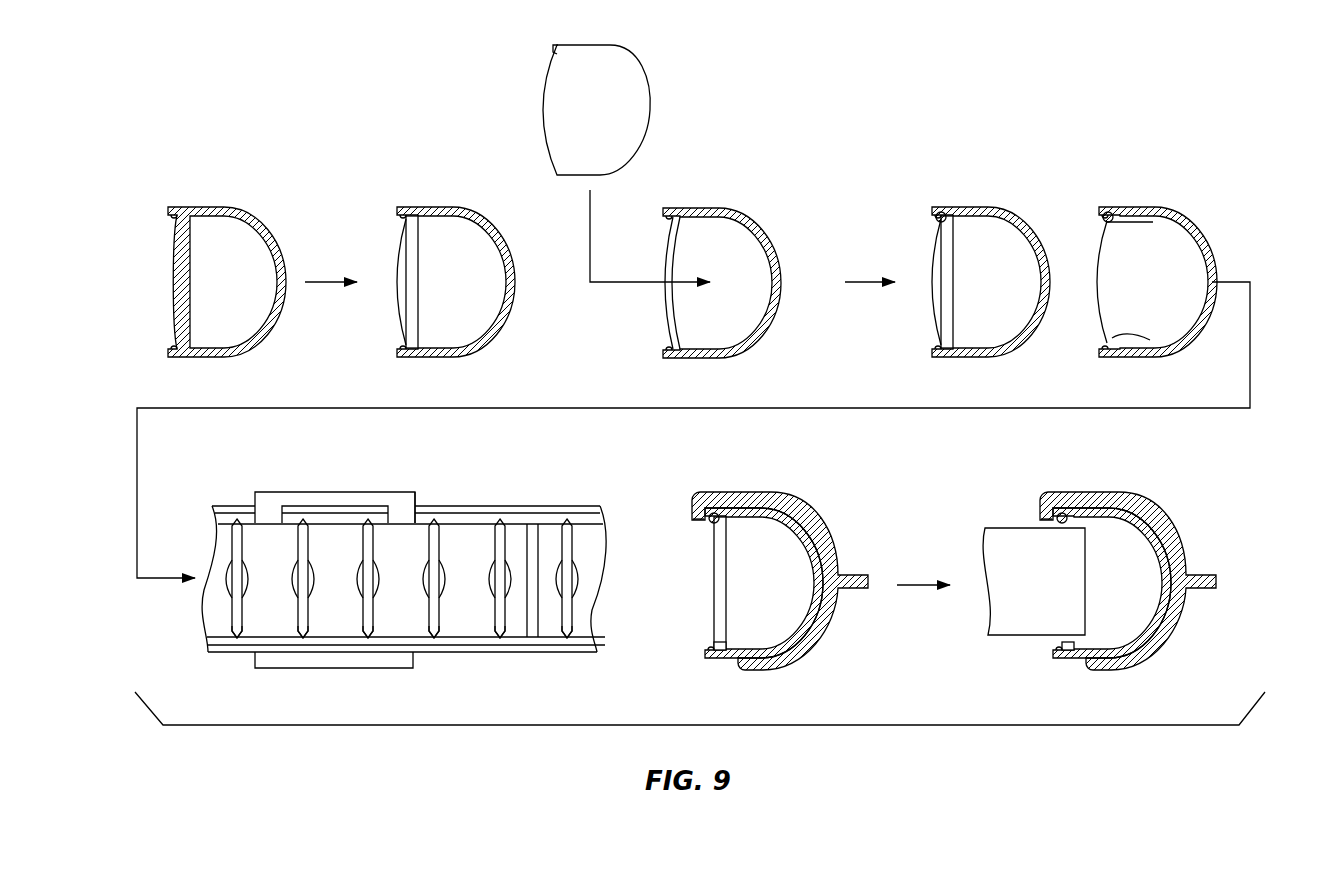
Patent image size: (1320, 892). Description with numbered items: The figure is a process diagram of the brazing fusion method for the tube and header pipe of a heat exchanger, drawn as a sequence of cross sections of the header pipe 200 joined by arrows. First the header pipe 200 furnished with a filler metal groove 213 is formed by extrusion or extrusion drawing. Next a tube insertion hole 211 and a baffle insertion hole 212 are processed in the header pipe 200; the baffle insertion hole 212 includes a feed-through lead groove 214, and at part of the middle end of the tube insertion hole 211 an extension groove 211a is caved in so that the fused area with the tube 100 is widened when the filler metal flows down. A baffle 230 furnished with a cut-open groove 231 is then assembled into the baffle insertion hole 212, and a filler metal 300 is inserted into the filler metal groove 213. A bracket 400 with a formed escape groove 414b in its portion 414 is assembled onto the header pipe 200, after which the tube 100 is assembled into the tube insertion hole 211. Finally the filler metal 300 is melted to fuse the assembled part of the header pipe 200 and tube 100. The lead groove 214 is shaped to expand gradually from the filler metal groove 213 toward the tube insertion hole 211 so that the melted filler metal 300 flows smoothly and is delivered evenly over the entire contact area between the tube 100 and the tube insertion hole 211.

The tube 100 is at (1003, 628).
The header pipe 200 is at (258, 206).
The tube insertion hole 211 is at (406, 325).
The extension groove 211a is at (398, 290).
The baffle insertion hole 212 is at (667, 305).
The filler metal groove 213 is at (170, 212).
The feed-through lead groove 214 is at (432, 615).
The baffle 230 is at (620, 130).
The cut-open groove 231 is at (553, 47).
The filler metal 300 is at (937, 218).
The bracket 400 is at (300, 490).
The bracket portion with escape groove 414 is at (405, 497).
The escape groove 414b is at (345, 515).